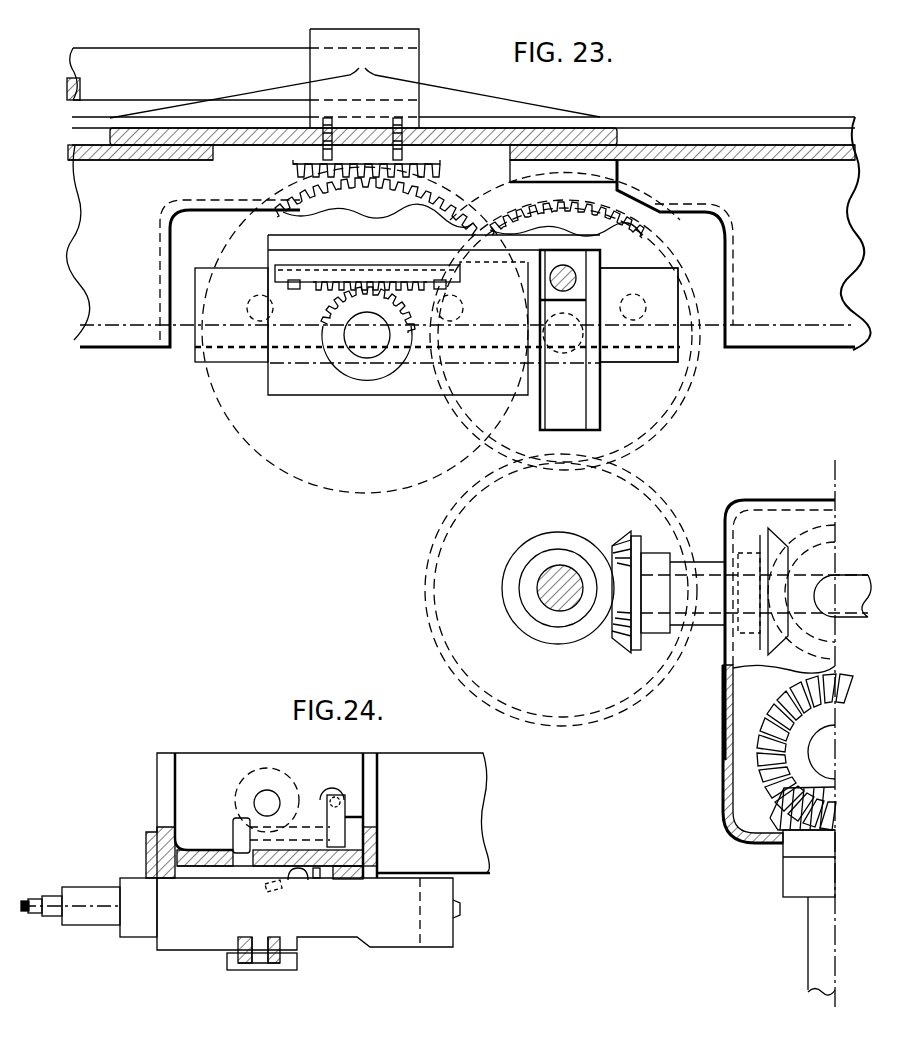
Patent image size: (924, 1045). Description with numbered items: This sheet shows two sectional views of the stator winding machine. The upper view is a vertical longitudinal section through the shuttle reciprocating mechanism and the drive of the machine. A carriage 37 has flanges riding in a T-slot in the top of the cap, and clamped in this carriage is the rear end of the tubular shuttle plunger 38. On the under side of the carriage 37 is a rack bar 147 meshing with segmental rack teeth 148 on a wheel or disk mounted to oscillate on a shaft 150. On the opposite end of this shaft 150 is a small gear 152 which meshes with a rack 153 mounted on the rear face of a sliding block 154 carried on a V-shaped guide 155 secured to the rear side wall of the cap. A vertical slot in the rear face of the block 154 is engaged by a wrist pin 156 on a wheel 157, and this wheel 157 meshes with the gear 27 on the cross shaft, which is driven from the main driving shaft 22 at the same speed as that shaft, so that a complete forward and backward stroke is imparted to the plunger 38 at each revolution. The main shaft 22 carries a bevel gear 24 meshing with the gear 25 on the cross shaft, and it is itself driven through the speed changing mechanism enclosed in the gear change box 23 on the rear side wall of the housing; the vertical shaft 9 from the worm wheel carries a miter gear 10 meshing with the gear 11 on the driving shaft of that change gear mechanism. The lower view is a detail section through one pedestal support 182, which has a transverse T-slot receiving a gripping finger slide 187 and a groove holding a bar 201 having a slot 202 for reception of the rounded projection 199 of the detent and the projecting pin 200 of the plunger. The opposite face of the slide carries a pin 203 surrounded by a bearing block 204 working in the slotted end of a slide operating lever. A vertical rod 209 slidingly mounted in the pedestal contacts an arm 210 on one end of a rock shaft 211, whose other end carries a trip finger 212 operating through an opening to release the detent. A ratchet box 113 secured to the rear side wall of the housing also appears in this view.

In FIG. 23, the shuttle plunger 38 is at (243, 74).
In FIG. 23, the carriage 37 is at (462, 105).
In FIG. 23, the rack bar 147 is at (430, 160).
In FIG. 23, the segmental rack teeth 148 is at (302, 190).
In FIG. 23, the rack 153 is at (327, 280).
In FIG. 23, the shaft 150 is at (378, 336).
In FIG. 23, the small gear 152 is at (343, 374).
In FIG. 23, the sliding block 154 is at (436, 316).
In FIG. 23, the V-shaped guide 155 is at (580, 405).
In FIG. 23, the wrist pin 156 is at (550, 283).
In FIG. 23, the wheel 157 is at (682, 408).
In FIG. 23, the gear 27 is at (641, 502).
In FIG. 23, the main driving shaft 22 is at (537, 596).
In FIG. 23, the bevel gear 24 is at (577, 644).
In FIG. 23, the gear 25 is at (657, 623).
In FIG. 23, the gear change box 23 is at (714, 766).
In FIG. 23, the gear 11 is at (773, 748).
In FIG. 23, the miter gear 10 is at (777, 803).
In FIG. 23, the vertical shaft 9 is at (814, 934).
In FIG. 24, the support 182 is at (190, 778).
In FIG. 24, the rock shaft 211 is at (302, 825).
In FIG. 24, the vertical rod 209 is at (332, 792).
In FIG. 24, the arm 210 is at (340, 822).
In FIG. 24, the trip finger 212 is at (247, 838).
In FIG. 24, the slot 202 is at (214, 862).
In FIG. 24, the ratchet box 113 is at (247, 862).
In FIG. 24, the rounded projection 199 is at (300, 880).
In FIG. 24, the projecting pin 200 is at (315, 878).
In FIG. 24, the bar 201 is at (358, 880).
In FIG. 24, the gripping finger slide 187 is at (147, 920).
In FIG. 24, the bearing block 204 is at (235, 955).
In FIG. 24, the pin 203 is at (260, 953).